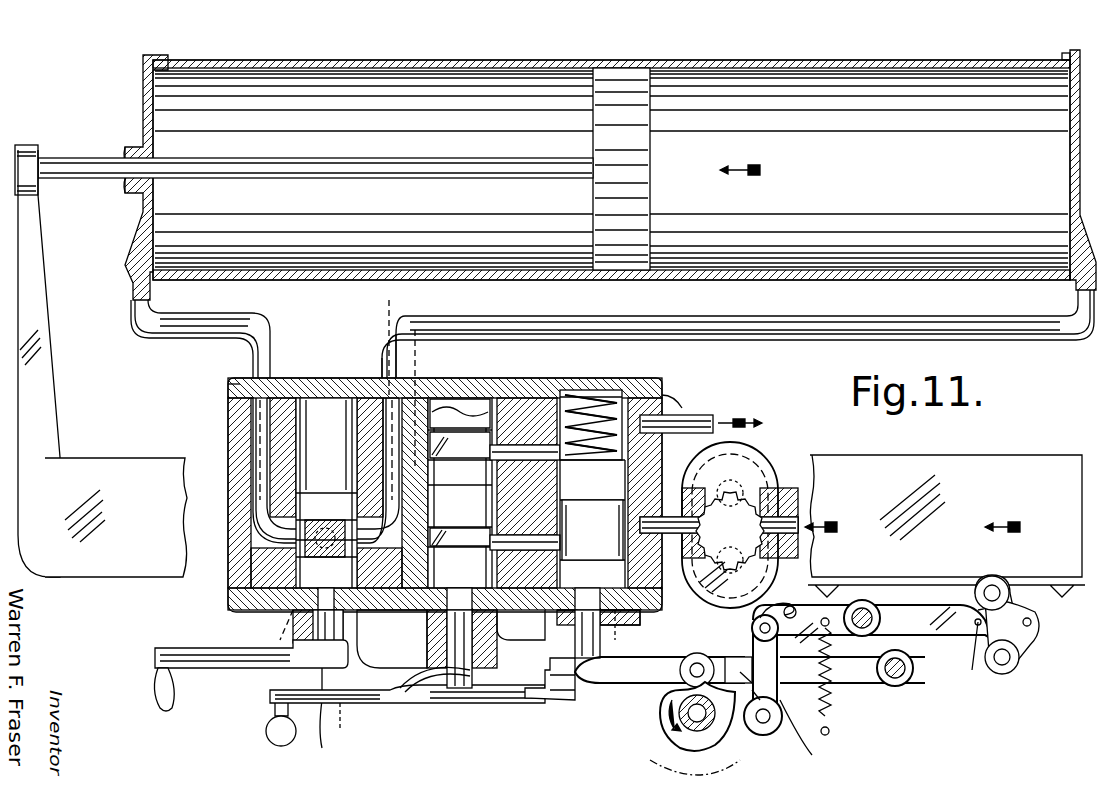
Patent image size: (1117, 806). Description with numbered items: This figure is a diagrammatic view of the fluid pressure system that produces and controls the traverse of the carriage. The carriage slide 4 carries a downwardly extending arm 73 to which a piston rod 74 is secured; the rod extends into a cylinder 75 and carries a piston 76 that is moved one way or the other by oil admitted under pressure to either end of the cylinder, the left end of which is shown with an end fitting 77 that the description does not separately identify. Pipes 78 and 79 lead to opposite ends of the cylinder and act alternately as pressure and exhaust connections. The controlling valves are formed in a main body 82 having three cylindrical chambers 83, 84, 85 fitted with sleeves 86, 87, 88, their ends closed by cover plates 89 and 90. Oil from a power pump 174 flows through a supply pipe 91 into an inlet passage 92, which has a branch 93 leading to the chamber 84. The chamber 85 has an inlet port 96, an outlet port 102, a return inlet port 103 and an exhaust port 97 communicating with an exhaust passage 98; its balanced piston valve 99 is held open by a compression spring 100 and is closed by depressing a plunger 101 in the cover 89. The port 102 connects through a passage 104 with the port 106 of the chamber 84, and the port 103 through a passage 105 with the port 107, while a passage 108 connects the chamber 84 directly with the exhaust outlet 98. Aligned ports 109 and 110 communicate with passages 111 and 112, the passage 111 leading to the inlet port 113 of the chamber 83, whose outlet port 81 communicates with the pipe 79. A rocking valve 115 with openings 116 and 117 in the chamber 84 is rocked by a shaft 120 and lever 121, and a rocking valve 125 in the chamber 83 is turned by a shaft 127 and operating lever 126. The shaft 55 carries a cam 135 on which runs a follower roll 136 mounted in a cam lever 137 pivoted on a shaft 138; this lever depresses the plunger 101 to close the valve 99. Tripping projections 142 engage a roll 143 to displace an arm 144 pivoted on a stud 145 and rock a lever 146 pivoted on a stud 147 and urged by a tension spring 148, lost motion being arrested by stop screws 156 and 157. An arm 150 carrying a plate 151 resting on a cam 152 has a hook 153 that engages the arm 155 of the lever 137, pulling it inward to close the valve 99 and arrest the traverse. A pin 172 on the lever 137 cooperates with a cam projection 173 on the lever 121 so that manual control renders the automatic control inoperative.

The carriage slide 4 is at (118, 470).
The shaft 55 is at (705, 722).
The downwardly extending arm 73 is at (48, 430).
The piston rod 74 is at (82, 162).
The cylinder 75 is at (470, 95).
The piston 76 is at (640, 185).
The cylinder head 77 is at (146, 110).
The pipe 78 is at (250, 345).
The pipe 79 is at (1012, 330).
The outlet port 81 is at (390, 598).
The main body or casting 82 is at (248, 555).
The valve chamber 83 is at (358, 400).
The valve chamber 84 is at (465, 405).
The valve chamber 85 is at (630, 440).
The sleeve 86 is at (262, 514).
The sleeve 87 is at (456, 400).
The sleeve 88 is at (652, 410).
The cover plate 89 is at (240, 600).
The cover plate 90 is at (230, 388).
The supply pipe 91 is at (668, 517).
The inlet passage 92 is at (680, 418).
The branch 93 is at (521, 632).
The inlet port 96 is at (640, 580).
The exhaust port 97 is at (670, 398).
The exhaust passage 98 is at (720, 416).
The balanced piston valve 99 is at (640, 600).
The compression spring 100 is at (596, 392).
The plunger 101 is at (585, 660).
The outlet port 102 is at (628, 614).
The return inlet port 103 is at (578, 392).
The passage 104 is at (550, 595).
The passage 105 is at (545, 390).
The port 106 is at (392, 640).
The port 107 is at (508, 448).
The passage 108 is at (500, 540).
The port 109 is at (432, 612).
The port 110 is at (411, 341).
The passage 111 is at (340, 705).
The passage 112 is at (380, 400).
The inlet port 113 is at (285, 615).
The rocking valve 115 is at (460, 493).
The opening 116 is at (460, 542).
The opening 117 is at (460, 445).
The shaft 120 is at (455, 690).
The lever 121 is at (315, 690).
The rocking valve 125 is at (322, 430).
The operating lever 126 is at (238, 656).
The shaft 127 is at (322, 748).
The cam 135 is at (690, 740).
The follower roll 136 is at (645, 665).
The cam lever 137 is at (908, 683).
The shaft 138 is at (912, 678).
The tripping projections 142 is at (925, 585).
The roll 143 is at (1010, 595).
The horizontally extending arm 144 is at (1015, 635).
The stud 145 is at (1020, 660).
The vertically disposed lever 146 is at (940, 628).
The stud 147 is at (852, 612).
The tension spring 148 is at (830, 700).
The forwardly extending arm 150 is at (814, 736).
The plate 151 is at (768, 735).
The cam 152 is at (660, 710).
The laterally projecting hook 153 is at (770, 685).
The forwardly projecting arm 155 is at (745, 660).
The adjustable stop screw 156 is at (970, 656).
The adjustable stop screw 157 is at (1032, 622).
The projecting pin 172 is at (530, 690).
The cam projection 173 is at (450, 683).
The power pump 174 is at (768, 465).